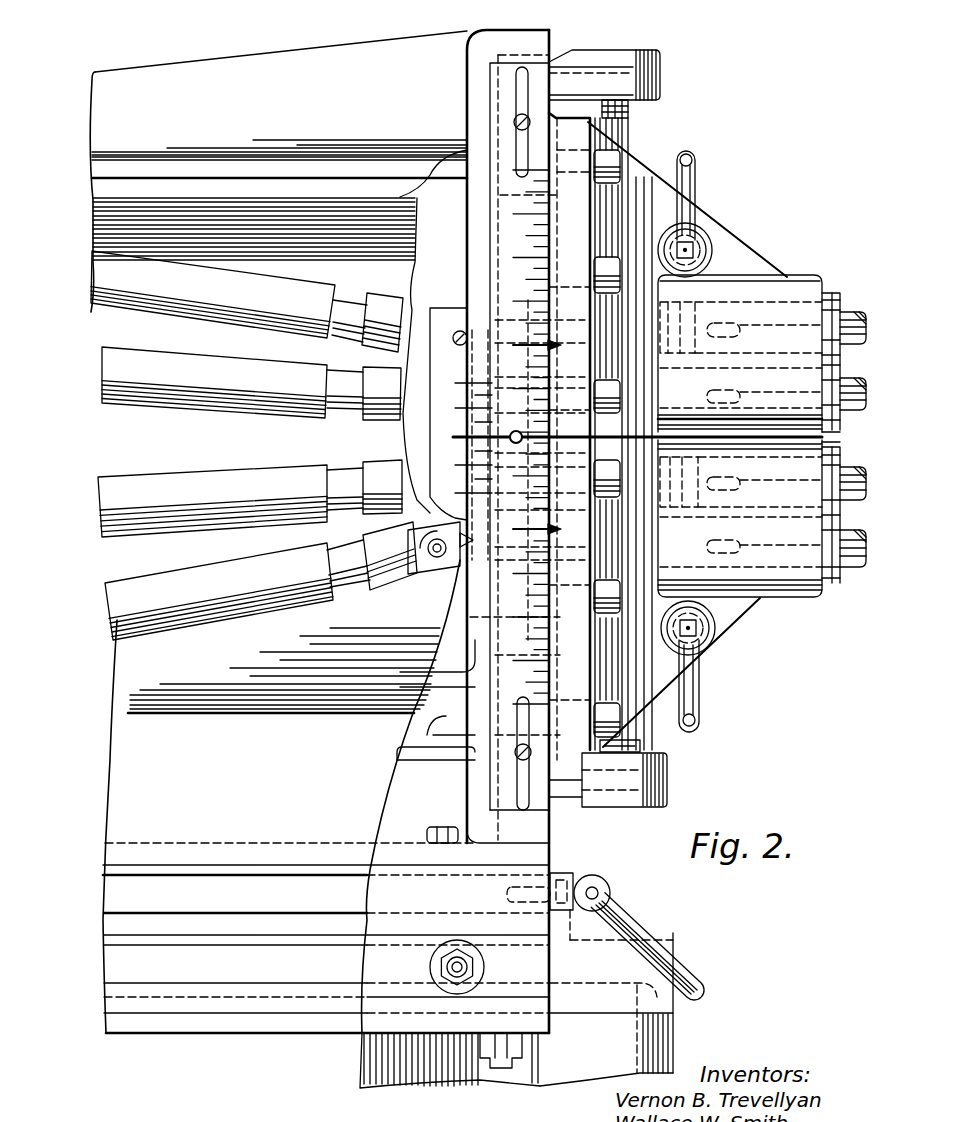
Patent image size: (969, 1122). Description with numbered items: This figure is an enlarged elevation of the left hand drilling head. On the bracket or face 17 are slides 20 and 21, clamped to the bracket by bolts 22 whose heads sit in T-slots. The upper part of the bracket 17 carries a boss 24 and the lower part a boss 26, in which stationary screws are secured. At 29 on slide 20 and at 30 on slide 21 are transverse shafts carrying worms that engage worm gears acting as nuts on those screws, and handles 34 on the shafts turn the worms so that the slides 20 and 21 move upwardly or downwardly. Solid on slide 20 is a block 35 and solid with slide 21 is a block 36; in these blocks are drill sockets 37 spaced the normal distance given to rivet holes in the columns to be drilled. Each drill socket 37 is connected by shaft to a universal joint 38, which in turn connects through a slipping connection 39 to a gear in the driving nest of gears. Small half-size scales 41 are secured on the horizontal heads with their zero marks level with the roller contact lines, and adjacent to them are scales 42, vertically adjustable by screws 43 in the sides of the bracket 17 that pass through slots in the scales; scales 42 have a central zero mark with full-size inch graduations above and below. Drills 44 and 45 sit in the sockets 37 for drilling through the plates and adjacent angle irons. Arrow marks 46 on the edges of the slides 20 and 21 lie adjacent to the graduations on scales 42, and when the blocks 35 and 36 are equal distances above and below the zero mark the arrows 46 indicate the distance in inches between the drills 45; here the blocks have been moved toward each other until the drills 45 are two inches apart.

The bracket 17 is at (497, 38).
The slide 20 is at (585, 218).
The slide 21 is at (630, 745).
The bolts 22 is at (614, 262).
The boss 24 is at (667, 90).
The boss 26 is at (668, 803).
The location of transverse shaft on slide 20 29 is at (700, 250).
The location of transverse shaft on slide 21 30 is at (702, 633).
The handles 34 is at (697, 204).
The block 35 is at (790, 275).
The block 36 is at (812, 598).
The drill sockets 37 is at (832, 293).
The universal joint 38 is at (425, 578).
The slipping connection 39 is at (180, 430).
The scales 41 is at (437, 418).
The scales 42 is at (500, 243).
The screws 43 is at (515, 122).
The drills 44 is at (858, 304).
The drills 45 is at (848, 466).
The arrow marks 46 is at (562, 349).